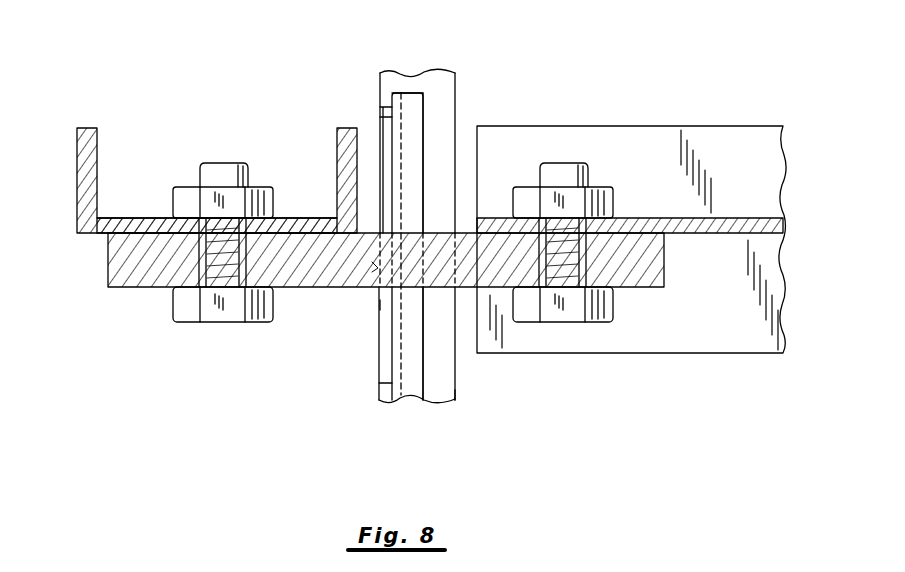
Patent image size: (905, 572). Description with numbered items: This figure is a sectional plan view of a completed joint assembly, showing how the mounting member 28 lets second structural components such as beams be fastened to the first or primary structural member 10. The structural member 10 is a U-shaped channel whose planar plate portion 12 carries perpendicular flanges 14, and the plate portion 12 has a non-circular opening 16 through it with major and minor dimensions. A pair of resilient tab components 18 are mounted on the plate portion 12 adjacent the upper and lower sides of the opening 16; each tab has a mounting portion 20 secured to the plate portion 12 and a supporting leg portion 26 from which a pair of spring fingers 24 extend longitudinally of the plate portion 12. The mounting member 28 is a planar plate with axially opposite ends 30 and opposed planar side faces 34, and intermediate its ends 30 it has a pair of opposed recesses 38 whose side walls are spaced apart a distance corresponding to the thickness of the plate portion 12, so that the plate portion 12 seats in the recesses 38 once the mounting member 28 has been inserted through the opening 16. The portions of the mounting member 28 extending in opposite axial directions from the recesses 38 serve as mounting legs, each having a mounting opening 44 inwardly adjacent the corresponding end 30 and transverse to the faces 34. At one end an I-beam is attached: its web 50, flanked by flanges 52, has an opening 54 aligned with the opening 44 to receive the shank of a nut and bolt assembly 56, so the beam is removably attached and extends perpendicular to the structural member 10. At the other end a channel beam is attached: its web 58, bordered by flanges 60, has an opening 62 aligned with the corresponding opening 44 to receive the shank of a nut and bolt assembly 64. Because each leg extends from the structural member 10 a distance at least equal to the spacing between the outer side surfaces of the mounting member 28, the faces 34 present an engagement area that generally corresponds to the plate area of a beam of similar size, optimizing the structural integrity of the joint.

The structural member 10 is at (485, 99).
The plate portion 12 is at (380, 395).
The flanges 14 is at (455, 395).
The non-circular opening 16 is at (380, 342).
The tab components 18 is at (397, 81).
The mounting portion 20 is at (392, 102).
The spring fingers 24 is at (423, 183).
The supporting leg portion 26 is at (424, 110).
The mounting member 28 is at (321, 297).
The axially opposite ends 30 is at (108, 250).
The planar side faces 34 is at (357, 205).
The recesses 38 is at (378, 309).
The mounting opening 44 is at (205, 272).
The web 50 is at (785, 222).
The flanges 52 is at (745, 126).
The opening 54 is at (573, 205).
The nut and bolt assembly 56 is at (571, 332).
The web 58 is at (135, 218).
The flanges 60 is at (77, 172).
The opening 62 is at (246, 186).
The nut and bolt assembly 64 is at (203, 336).